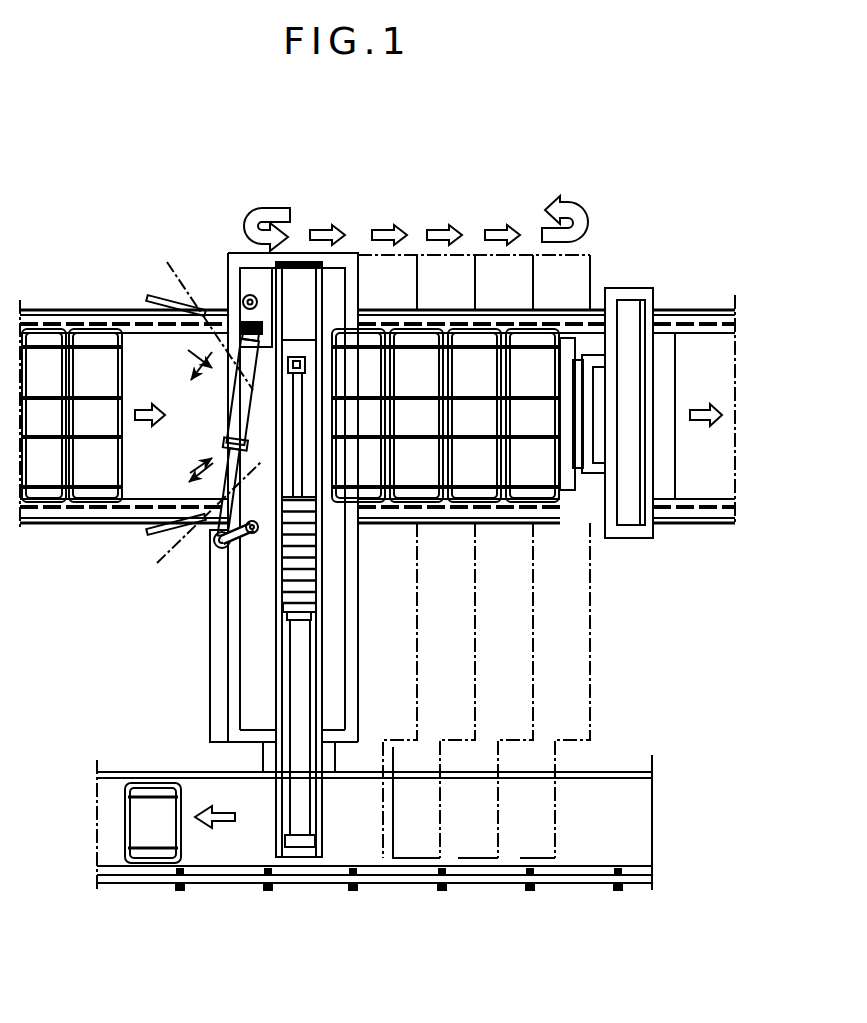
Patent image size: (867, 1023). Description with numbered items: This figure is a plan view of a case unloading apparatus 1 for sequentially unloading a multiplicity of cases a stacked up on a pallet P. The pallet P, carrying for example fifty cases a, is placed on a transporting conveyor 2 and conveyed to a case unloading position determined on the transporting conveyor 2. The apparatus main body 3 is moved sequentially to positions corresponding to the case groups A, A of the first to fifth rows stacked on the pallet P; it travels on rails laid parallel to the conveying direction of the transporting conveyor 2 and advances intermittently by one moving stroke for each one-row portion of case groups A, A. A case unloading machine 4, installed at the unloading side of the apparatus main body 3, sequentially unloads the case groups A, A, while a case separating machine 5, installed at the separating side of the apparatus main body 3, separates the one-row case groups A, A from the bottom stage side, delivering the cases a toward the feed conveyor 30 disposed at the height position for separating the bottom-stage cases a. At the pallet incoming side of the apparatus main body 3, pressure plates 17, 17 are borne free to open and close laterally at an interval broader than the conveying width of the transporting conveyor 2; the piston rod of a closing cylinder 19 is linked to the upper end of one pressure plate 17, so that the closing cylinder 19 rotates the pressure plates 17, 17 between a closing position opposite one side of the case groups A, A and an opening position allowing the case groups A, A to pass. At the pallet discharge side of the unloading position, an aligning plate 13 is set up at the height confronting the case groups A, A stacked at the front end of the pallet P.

The case unloading apparatus 1 is at (614, 222).
The transporting conveyor 2 is at (101, 305).
The apparatus main body 3 is at (227, 275).
The case unloading machine 4 is at (299, 312).
The case separating machine 5 is at (210, 613).
The aligning plate 13 is at (568, 475).
The pressure plates 17 is at (168, 299).
The closing cylinder 19 is at (238, 410).
The feed conveyor 30 is at (207, 783).
The cases a is at (126, 808).
The pallet P is at (64, 332).
The case groups A is at (78, 505).